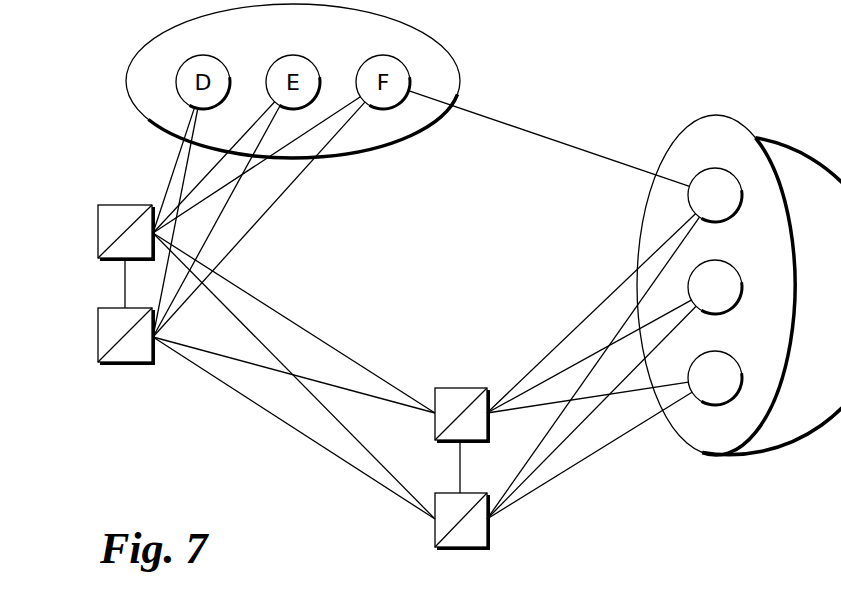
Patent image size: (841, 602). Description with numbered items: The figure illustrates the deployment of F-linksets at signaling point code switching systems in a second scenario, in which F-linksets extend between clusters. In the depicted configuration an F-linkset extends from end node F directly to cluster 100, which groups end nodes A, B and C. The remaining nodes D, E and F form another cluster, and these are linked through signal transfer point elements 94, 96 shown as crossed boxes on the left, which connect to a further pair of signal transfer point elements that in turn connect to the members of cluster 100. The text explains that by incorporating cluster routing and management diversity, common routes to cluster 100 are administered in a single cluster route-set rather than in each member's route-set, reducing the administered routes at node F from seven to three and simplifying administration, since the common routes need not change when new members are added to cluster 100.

The fabric interconnection device 94 is at (98, 228).
The fabric interconnection device 96 is at (98, 323).
The cluster 100 is at (692, 449).